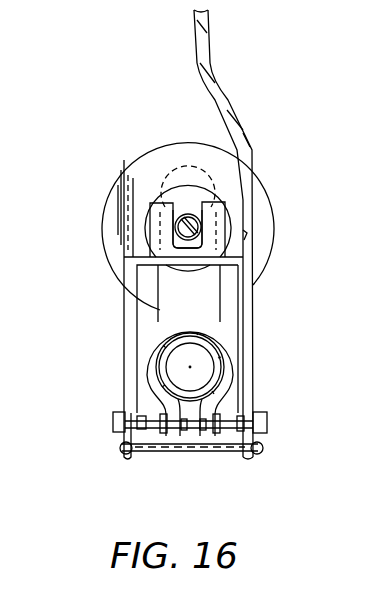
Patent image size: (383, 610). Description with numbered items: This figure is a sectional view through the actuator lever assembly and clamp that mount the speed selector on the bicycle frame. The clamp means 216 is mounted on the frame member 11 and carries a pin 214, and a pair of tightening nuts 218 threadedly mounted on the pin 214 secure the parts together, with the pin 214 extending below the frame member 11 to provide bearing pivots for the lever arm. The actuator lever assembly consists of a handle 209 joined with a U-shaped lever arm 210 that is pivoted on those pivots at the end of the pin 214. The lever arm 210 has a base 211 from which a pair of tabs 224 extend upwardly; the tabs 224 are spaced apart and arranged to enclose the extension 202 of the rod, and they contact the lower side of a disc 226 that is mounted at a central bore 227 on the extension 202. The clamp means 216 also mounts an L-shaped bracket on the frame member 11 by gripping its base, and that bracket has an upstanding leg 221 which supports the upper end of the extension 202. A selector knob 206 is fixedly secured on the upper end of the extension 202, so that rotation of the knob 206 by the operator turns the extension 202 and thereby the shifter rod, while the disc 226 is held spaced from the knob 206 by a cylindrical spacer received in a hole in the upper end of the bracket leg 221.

The handle 209 is at (195, 40).
The selector knob 206 is at (182, 143).
The disc 226 is at (166, 204).
The tabs 224 is at (157, 203).
The central bore 227 is at (182, 222).
The extension 202 is at (195, 218).
The base 211 is at (126, 286).
The upstanding leg 221 is at (162, 315).
The U-shaped lever arm 210 is at (245, 318).
The frame member 11 is at (193, 340).
The clamp means 216 is at (229, 372).
The pin 214 is at (241, 418).
The tightening nuts 218 is at (170, 436).